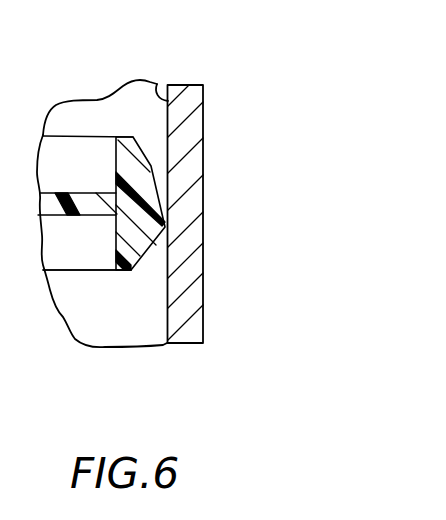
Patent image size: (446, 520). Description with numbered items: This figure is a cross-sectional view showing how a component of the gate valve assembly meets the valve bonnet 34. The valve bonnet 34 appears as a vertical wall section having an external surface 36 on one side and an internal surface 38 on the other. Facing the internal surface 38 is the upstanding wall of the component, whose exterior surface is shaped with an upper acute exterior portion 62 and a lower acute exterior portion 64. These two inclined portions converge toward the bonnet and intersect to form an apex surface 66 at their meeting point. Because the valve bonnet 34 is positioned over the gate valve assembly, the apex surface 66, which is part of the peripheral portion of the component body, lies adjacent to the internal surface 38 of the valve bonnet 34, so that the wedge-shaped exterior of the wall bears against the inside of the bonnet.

The valve bonnet 34 is at (193, 107).
The external surface 36 is at (203, 312).
The internal surface 38 is at (158, 84).
The upper acute exterior portion 62 is at (152, 169).
The lower acute exterior portion 64 is at (143, 254).
The apex surface 66 is at (167, 209).